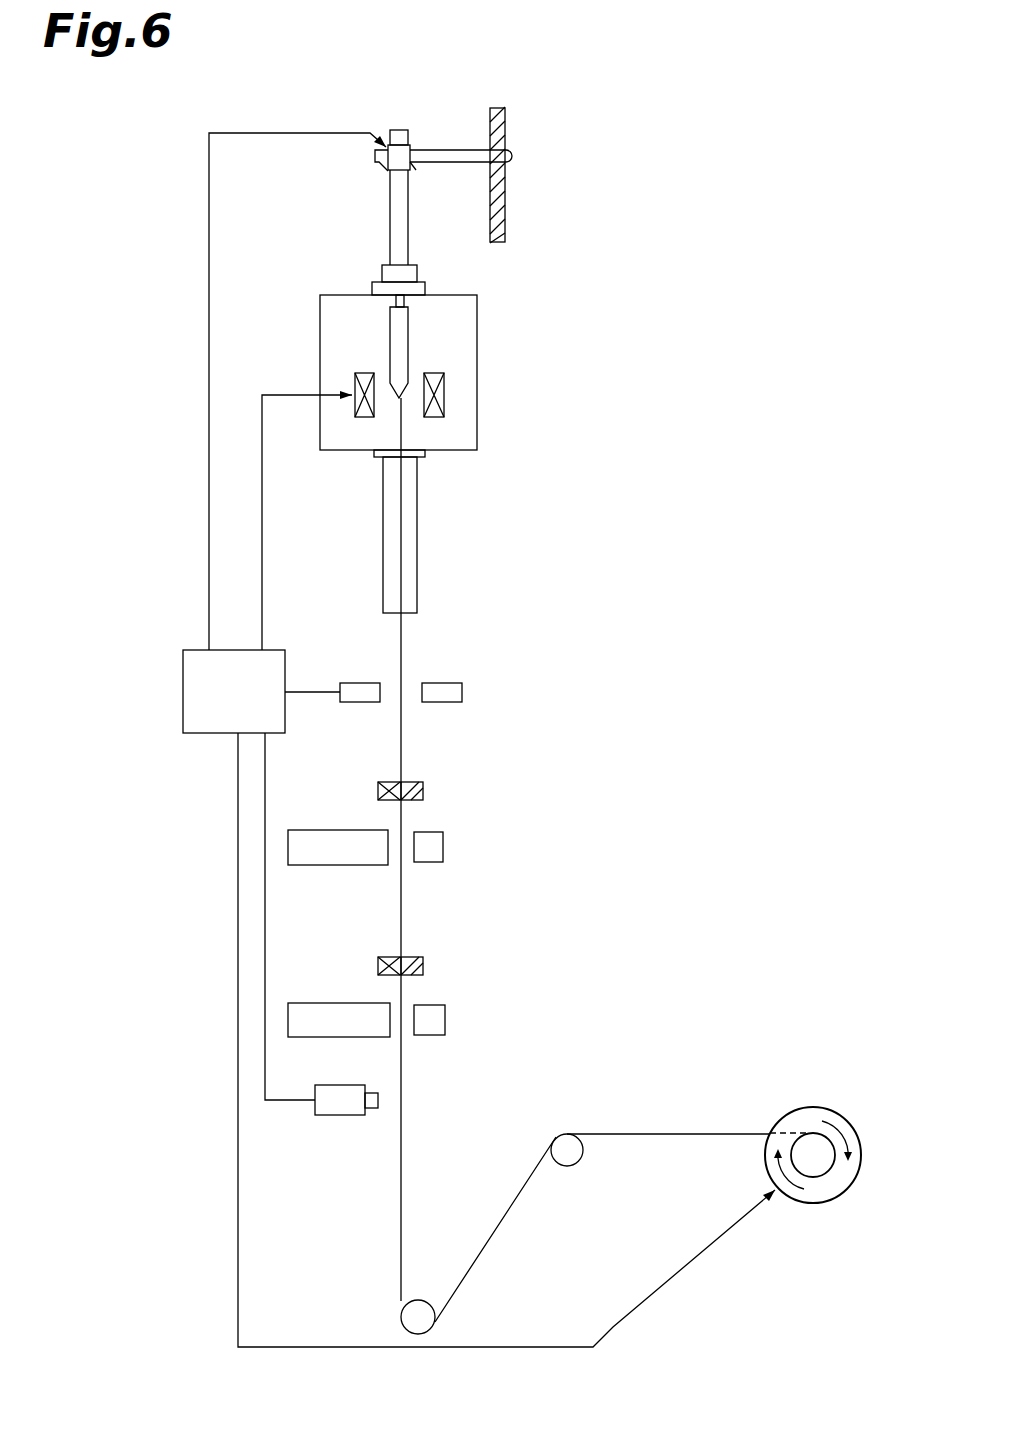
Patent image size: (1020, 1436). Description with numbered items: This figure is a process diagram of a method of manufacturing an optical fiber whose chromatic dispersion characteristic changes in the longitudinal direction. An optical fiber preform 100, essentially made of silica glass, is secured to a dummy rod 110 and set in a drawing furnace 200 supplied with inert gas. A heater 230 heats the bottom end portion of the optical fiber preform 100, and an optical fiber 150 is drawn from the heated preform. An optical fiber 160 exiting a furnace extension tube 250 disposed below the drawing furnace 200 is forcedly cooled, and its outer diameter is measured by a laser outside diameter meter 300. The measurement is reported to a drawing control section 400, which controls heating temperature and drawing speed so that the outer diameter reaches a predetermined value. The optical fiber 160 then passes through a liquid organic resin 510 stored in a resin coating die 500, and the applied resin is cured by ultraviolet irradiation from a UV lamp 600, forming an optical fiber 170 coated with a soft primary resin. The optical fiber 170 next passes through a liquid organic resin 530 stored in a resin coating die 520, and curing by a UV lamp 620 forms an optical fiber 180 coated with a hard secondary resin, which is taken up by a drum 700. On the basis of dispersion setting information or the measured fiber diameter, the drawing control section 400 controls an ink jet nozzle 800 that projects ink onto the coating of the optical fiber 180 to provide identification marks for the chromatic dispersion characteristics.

The optical fiber preform 100 is at (400, 350).
The dummy rod 110 is at (397, 299).
The optical fiber 150 is at (401, 438).
The optical fiber 160 is at (401, 660).
The optical fiber 170 is at (402, 891).
The optical fiber 180 is at (402, 1078).
The drawing furnace 200 is at (477, 400).
The heater 230 is at (363, 418).
The furnace extension tube 250 is at (417, 563).
The laser outside diameter meter 300 is at (462, 692).
The drawing control section 400 is at (202, 733).
The resin coating die 500 is at (423, 793).
The liquid organic resin 510 is at (415, 782).
The resin coating die 520 is at (423, 967).
The liquid organic resin 530 is at (415, 957).
The UV lamp 600 is at (338, 830).
The UV lamp 620 is at (338, 1003).
The drum 700 is at (827, 1193).
The ink jet nozzle 800 is at (347, 1117).